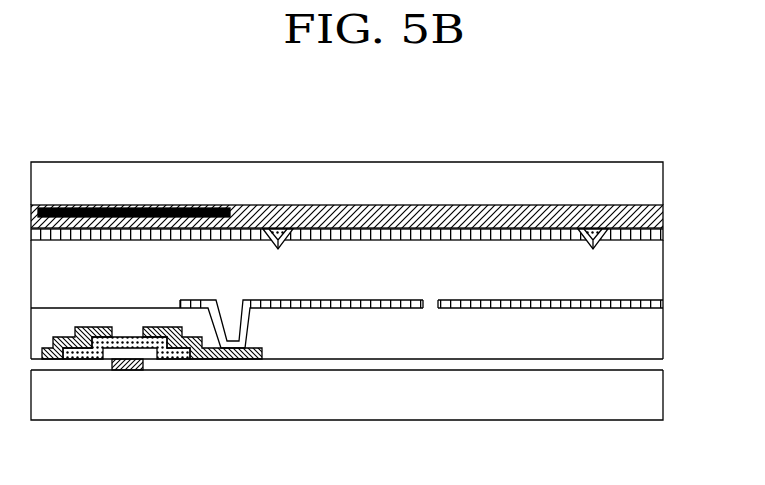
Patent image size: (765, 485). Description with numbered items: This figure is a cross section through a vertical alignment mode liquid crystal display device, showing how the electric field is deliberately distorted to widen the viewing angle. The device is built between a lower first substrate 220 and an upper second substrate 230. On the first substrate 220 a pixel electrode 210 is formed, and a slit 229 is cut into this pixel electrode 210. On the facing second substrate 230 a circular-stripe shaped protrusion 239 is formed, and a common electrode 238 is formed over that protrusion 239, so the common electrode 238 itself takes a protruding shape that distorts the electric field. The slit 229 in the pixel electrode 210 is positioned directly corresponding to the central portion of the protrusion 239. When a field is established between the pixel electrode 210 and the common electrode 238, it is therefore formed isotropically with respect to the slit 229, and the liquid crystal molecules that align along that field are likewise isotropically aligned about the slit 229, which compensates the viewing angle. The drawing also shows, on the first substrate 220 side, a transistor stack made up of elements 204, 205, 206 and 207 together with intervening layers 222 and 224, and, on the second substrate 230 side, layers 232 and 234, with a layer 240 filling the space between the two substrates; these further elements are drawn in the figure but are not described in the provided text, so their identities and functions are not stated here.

The gate electrode 204 is at (127, 370).
The active layer 205 is at (175, 359).
The source electrode 206 is at (57, 359).
The drain electrode 207 is at (240, 359).
The pixel electrode 210 is at (648, 305).
The first substrate 220 is at (648, 395).
The gate insulating layer 222 is at (648, 366).
The passivation layer 224 is at (648, 335).
The slit 229 is at (431, 309).
The second substrate 230 is at (647, 186).
The black matrix 232 is at (155, 208).
The color filter layer 234 is at (496, 228).
The common electrode 238 is at (648, 233).
The protrusion 239 is at (593, 231).
The liquid crystal layer 240 is at (648, 268).